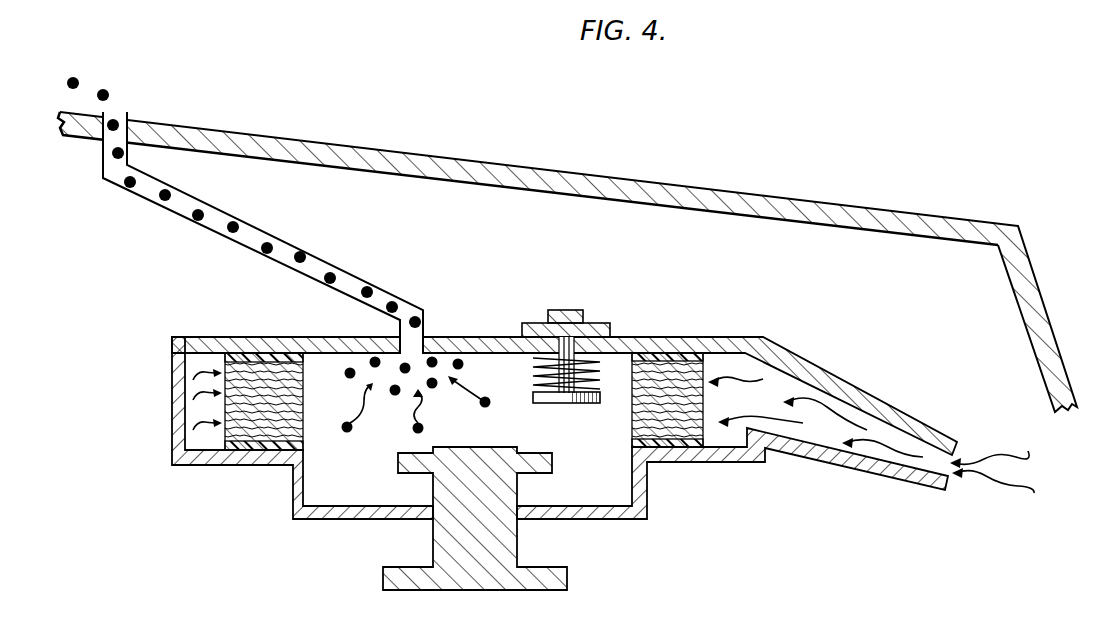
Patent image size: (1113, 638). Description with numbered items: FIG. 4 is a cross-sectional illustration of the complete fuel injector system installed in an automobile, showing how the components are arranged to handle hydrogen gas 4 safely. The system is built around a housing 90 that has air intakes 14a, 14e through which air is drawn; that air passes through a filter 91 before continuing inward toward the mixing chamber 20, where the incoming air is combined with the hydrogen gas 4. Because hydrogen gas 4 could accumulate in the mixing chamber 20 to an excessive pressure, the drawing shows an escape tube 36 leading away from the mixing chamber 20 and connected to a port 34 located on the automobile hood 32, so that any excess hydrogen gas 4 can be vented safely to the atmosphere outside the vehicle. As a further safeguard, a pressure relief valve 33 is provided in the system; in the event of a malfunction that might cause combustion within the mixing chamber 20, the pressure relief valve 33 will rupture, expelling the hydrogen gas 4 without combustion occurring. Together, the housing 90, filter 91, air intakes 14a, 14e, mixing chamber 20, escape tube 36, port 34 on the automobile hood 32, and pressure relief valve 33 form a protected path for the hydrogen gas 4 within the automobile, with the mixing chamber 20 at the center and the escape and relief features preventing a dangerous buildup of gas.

The automobile hood 32 is at (610, 178).
The port 34 is at (122, 120).
The escape tube 36 is at (340, 269).
The hydrogen gas 4 is at (435, 355).
The pressure relief valve 33 is at (570, 311).
The housing 90 is at (678, 347).
The filter 91 is at (258, 353).
The mixing chamber 20 is at (505, 542).
The air intake 14e is at (993, 460).
The air intake 14a is at (1013, 493).